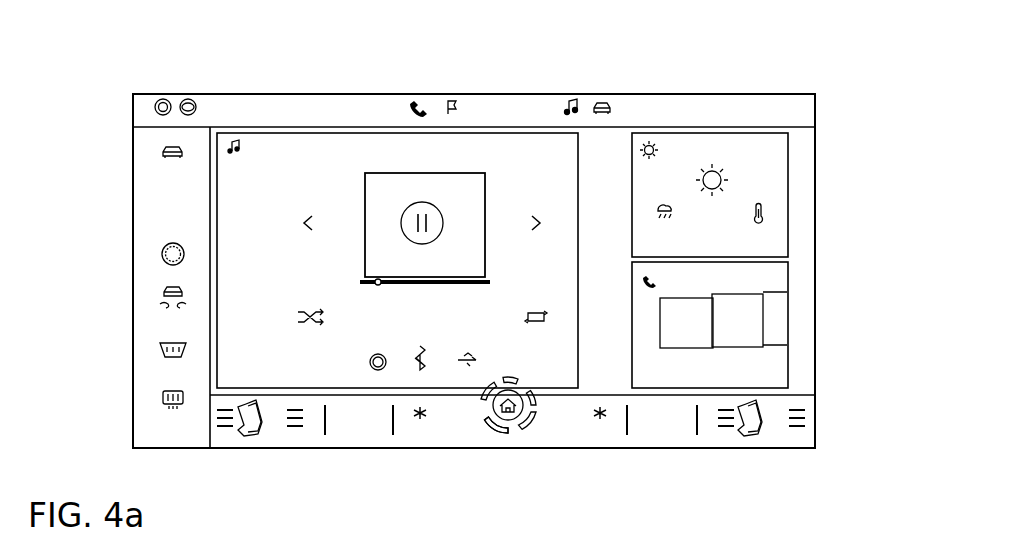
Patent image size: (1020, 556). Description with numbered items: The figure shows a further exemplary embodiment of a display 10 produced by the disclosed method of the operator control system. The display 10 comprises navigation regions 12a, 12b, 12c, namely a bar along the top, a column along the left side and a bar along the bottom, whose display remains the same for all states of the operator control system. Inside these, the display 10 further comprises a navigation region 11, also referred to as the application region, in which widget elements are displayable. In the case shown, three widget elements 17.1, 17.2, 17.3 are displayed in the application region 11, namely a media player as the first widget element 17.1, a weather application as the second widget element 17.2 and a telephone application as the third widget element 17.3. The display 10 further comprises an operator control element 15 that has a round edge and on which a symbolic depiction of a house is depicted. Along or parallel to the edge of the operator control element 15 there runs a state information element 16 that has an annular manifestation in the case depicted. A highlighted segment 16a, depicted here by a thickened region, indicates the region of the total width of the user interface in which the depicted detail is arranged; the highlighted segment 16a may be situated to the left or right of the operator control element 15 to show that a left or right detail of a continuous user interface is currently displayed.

The display 10 is at (155, 80).
The navigation region 11 is at (810, 186).
The navigation region 12a is at (642, 107).
The navigation region 12b is at (144, 355).
The navigation region 12c is at (793, 441).
The operator control element 15 is at (503, 425).
The state information element 16 is at (525, 430).
The highlighted segment 16a is at (482, 420).
The widget element 17.1 is at (533, 143).
The widget element 17.2 is at (776, 156).
The widget element 17.3 is at (778, 303).